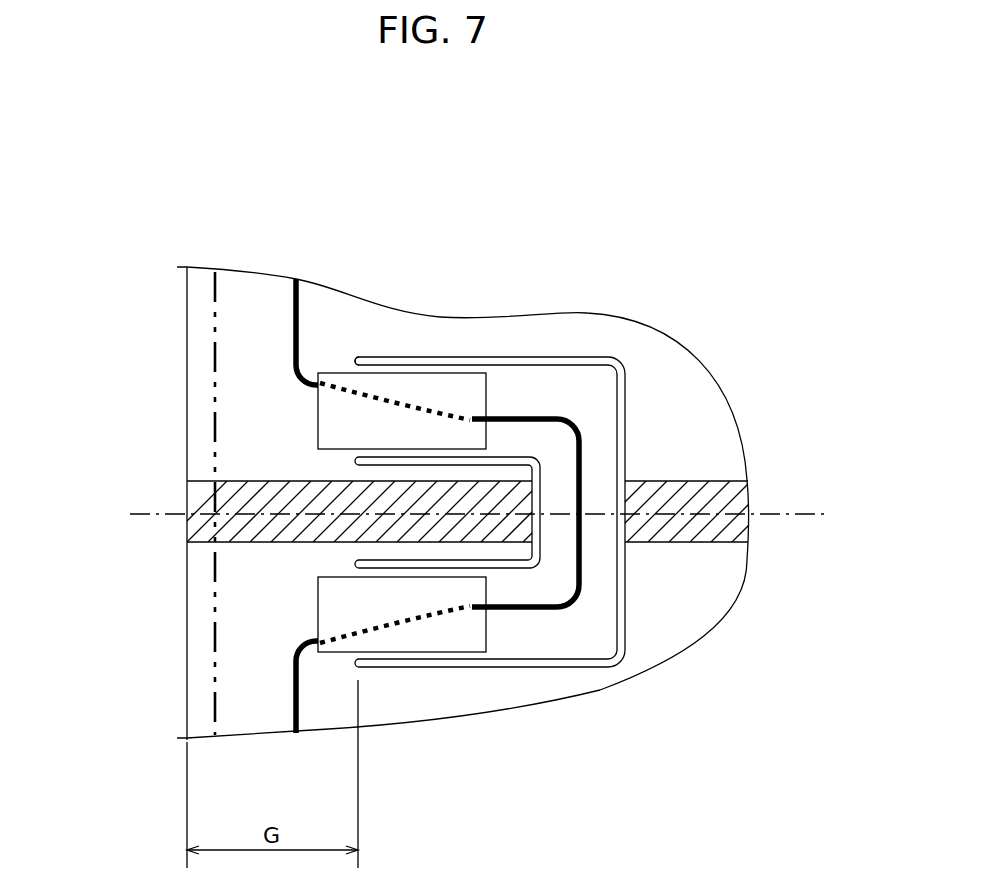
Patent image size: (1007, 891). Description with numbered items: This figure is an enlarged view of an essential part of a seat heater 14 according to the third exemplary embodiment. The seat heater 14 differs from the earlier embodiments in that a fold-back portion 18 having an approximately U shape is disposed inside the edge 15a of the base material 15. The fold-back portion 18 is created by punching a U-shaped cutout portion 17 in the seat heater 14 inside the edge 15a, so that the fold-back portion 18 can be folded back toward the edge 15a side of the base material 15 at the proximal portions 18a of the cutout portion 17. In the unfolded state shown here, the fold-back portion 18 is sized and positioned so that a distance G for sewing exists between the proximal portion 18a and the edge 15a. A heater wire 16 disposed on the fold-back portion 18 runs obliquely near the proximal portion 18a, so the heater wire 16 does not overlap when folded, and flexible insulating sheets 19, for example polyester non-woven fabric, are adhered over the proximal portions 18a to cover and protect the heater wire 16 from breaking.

The seat heater 14 is at (115, 131).
The base material 15 is at (205, 603).
The edge of base material 15a is at (185, 412).
The heater wire 16 is at (293, 698).
The cutout portion 17 is at (448, 663).
The fold-back portion 18 is at (570, 640).
The proximal portion 18a is at (355, 358).
The sheet 19 is at (447, 393).